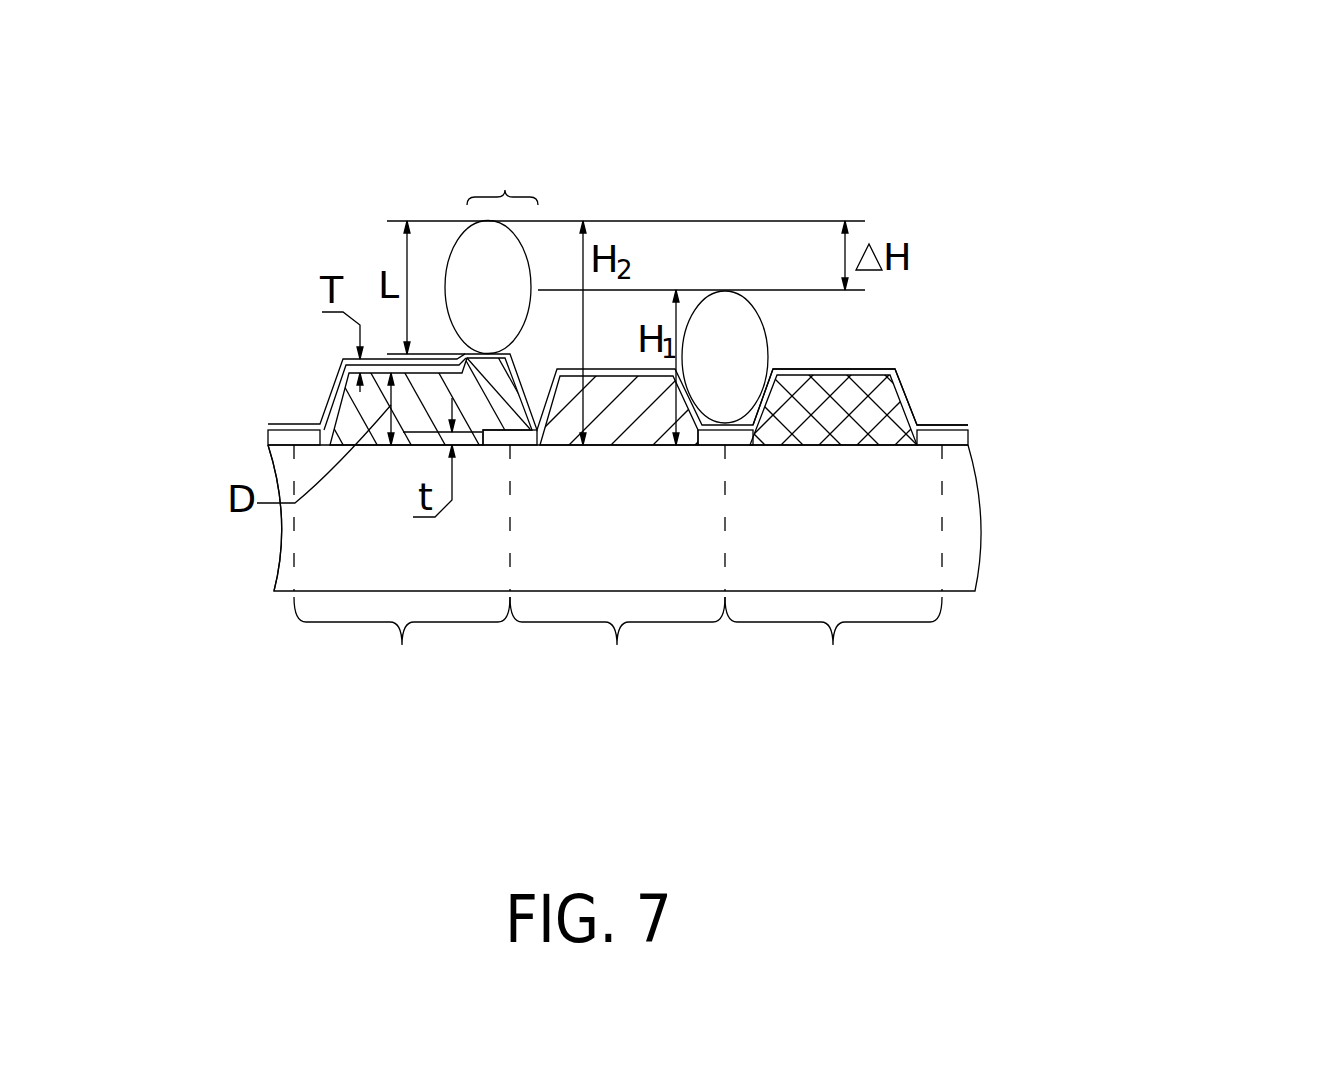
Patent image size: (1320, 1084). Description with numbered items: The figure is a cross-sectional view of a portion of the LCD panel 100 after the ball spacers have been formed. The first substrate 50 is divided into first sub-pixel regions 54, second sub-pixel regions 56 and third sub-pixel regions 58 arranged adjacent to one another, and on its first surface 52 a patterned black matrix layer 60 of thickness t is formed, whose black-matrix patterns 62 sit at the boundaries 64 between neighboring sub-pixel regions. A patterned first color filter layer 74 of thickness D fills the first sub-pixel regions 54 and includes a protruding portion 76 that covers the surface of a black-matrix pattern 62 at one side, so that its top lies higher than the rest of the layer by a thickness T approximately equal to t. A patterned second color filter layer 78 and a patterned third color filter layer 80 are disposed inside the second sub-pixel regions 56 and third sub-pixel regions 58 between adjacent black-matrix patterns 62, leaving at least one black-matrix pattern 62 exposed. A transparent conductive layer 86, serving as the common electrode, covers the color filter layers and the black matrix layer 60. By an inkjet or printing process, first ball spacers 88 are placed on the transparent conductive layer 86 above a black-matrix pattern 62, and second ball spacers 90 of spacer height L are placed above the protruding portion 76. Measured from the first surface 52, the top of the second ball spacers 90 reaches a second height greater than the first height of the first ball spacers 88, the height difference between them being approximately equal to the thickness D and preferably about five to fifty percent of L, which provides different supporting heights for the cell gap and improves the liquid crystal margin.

The first substrate 50 is at (975, 535).
The first surface 52 is at (272, 459).
The first sub-pixel regions 54 is at (402, 565).
The second sub-pixel regions 56 is at (617, 565).
The third sub-pixel regions 58 is at (833, 565).
The patterned black matrix layer 60 is at (972, 437).
The black-matrix patterns 62 is at (280, 437).
The boundaries 64 is at (290, 540).
The patterned first color filter layer 74 is at (347, 420).
The protruding portion 76 is at (502, 176).
The patterned second color filter layer 78 is at (596, 378).
The patterned third color filter layer 80 is at (868, 390).
The transparent conductive layer 86 is at (945, 418).
The first ball spacers 88 is at (747, 371).
The second ball spacers 90 is at (510, 302).
The LCD panel 100 is at (1107, 177).